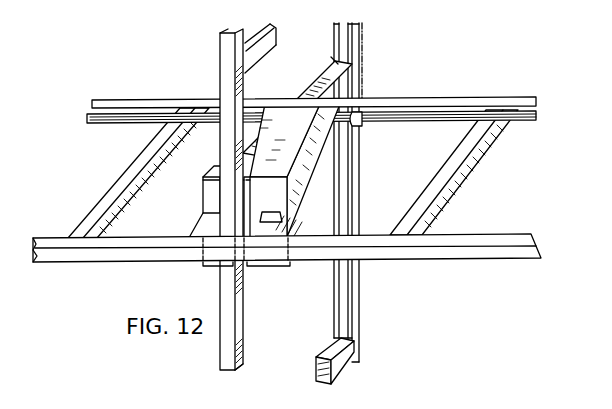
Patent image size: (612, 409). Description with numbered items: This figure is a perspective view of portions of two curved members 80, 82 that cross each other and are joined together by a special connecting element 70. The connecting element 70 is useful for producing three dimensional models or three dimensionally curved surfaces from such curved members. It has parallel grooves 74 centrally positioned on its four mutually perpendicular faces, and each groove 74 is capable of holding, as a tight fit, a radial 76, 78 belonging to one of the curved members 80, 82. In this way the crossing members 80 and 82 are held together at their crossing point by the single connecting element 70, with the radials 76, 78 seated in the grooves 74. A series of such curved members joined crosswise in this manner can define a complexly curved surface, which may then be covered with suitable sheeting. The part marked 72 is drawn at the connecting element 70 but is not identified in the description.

The block 70 is at (274, 106).
The fastener 72 is at (270, 212).
The clamp plate 74 is at (247, 178).
The bracket 76 is at (358, 123).
The rafter 78 is at (331, 78).
The rail 80 is at (175, 97).
The post 82 is at (219, 72).